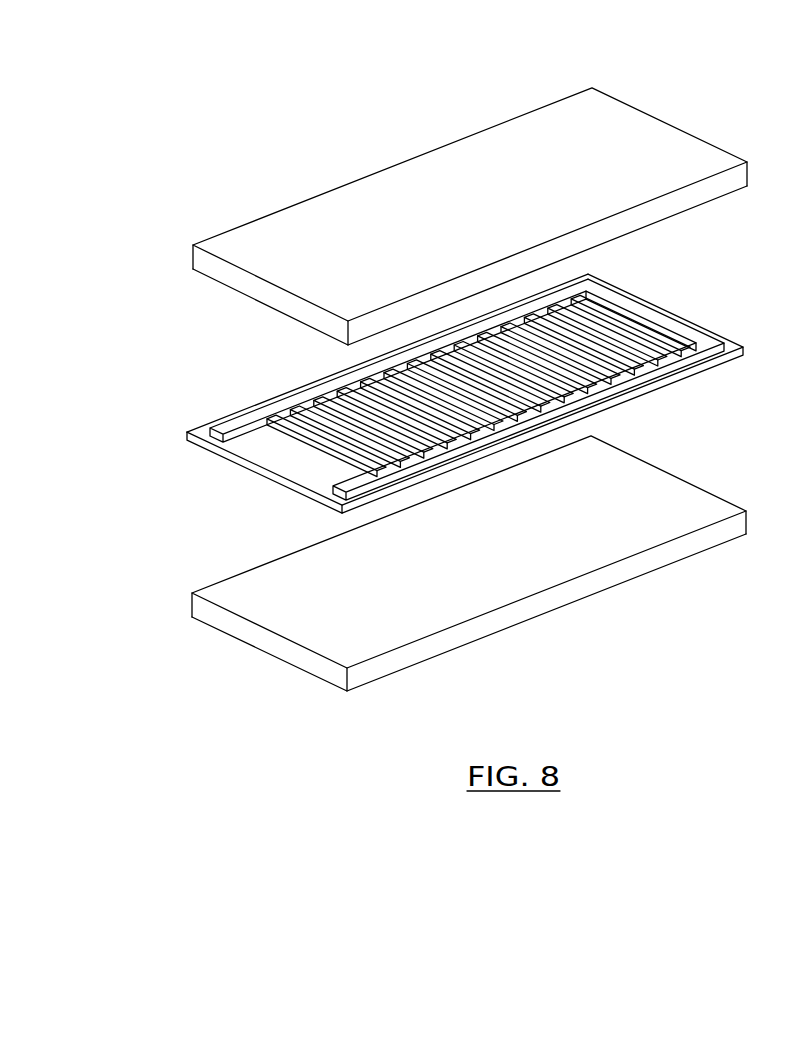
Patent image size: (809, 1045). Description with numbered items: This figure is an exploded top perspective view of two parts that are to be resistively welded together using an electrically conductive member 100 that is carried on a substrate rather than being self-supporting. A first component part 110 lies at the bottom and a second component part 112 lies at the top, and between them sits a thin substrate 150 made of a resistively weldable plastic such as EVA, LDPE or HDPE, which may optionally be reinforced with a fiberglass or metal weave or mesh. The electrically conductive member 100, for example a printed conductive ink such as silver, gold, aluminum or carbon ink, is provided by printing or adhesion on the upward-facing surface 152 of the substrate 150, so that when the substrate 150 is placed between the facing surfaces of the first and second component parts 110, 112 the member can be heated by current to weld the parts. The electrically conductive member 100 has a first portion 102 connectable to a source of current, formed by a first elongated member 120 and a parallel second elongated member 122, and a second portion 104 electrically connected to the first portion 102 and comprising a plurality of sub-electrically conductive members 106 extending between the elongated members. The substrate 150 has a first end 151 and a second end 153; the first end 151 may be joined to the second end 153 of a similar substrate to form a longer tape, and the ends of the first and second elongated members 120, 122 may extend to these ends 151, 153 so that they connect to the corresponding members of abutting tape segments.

The electrically conductive member 100 is at (684, 285).
The first portion 102 is at (430, 391).
The second portion 104 is at (607, 313).
The sub-electrically conductive members 106 is at (267, 418).
The first component part 110 is at (683, 556).
The second component part 112 is at (694, 158).
The first elongated member 120 is at (215, 425).
The second elongated member 122 is at (325, 498).
The substrate 150 is at (453, 403).
The first end 151 is at (270, 484).
The surface 152 is at (214, 457).
The second end 153 is at (710, 338).